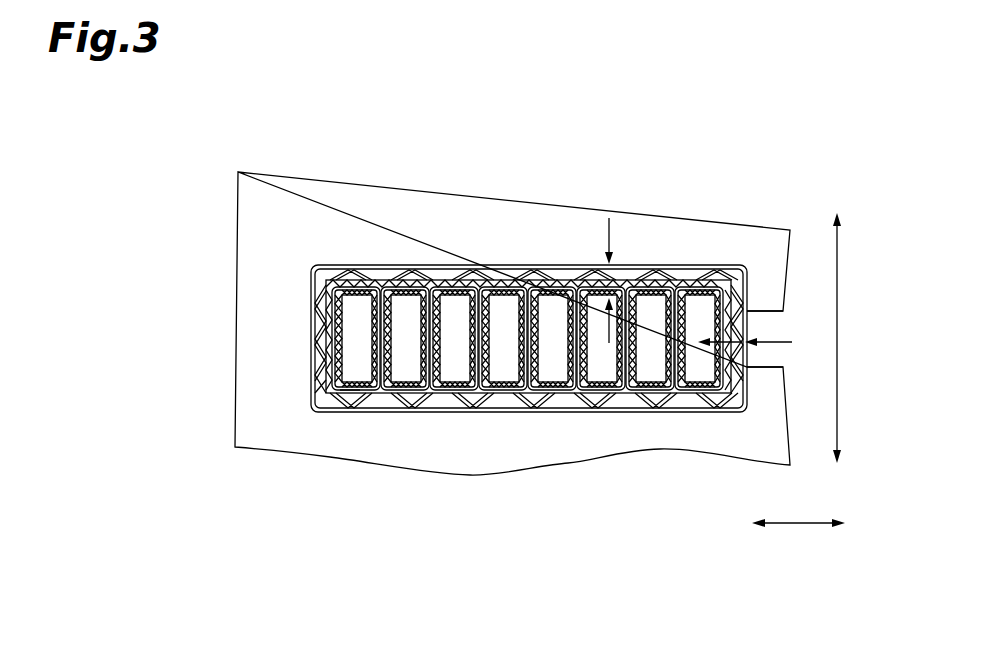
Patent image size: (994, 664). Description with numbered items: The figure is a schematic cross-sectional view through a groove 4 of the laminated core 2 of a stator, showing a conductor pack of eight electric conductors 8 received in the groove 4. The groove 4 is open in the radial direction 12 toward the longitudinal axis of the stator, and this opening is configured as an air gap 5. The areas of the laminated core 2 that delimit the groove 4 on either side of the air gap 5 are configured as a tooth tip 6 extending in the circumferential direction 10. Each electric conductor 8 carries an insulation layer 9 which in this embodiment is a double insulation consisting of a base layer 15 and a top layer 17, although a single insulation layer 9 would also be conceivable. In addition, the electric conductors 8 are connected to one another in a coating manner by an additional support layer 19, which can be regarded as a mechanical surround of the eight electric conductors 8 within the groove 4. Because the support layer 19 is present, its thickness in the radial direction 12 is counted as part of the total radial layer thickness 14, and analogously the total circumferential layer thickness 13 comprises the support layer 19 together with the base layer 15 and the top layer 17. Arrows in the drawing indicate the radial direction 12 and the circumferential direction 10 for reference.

The laminated core 2 is at (568, 449).
The groove 4 is at (734, 248).
The air gap 5 is at (767, 300).
The tooth tip 6 is at (763, 383).
The electric conductor 8 is at (457, 367).
The insulation layer 9 is at (310, 261).
The circumferential direction 10 is at (832, 347).
The radial direction 12 is at (805, 535).
The total circumferential layer thickness 13 is at (621, 283).
The total radial layer thickness 14 is at (745, 328).
The base layer 15 is at (350, 390).
The top layer 17 is at (331, 395).
The support layer 19 is at (322, 330).